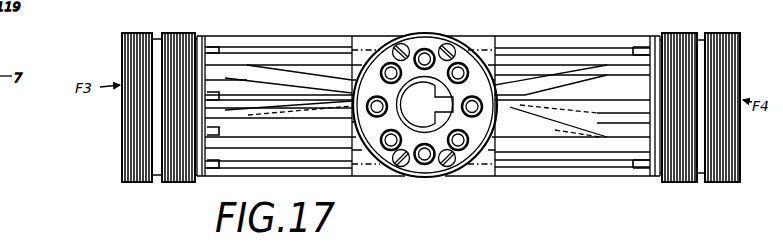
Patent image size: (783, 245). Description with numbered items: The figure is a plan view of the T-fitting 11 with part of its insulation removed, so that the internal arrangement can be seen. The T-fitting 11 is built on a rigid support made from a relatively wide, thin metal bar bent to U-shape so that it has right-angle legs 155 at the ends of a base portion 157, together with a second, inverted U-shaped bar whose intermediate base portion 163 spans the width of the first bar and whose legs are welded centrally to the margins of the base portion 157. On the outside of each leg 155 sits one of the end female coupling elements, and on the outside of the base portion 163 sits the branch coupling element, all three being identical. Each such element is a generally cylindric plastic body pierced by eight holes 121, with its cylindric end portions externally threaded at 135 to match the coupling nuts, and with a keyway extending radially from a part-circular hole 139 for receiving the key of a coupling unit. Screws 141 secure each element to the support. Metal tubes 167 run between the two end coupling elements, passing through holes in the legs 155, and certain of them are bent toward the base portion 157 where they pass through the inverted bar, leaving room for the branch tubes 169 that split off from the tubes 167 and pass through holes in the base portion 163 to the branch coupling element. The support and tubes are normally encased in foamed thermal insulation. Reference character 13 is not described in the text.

The T-fitting 11 is at (286, 19).
The contact insert disc 13 is at (429, 31).
The holes 121 is at (366, 109).
The external threading 135 is at (728, 33).
The part-circular hole 139 is at (431, 113).
The screws 141 is at (402, 43).
The legs 155 is at (213, 9).
The base portion 157 is at (338, 36).
The intermediate base portion 163 is at (478, 176).
The metal tubes 167 is at (538, 36).
The branch metal tubes 169 is at (273, 96).